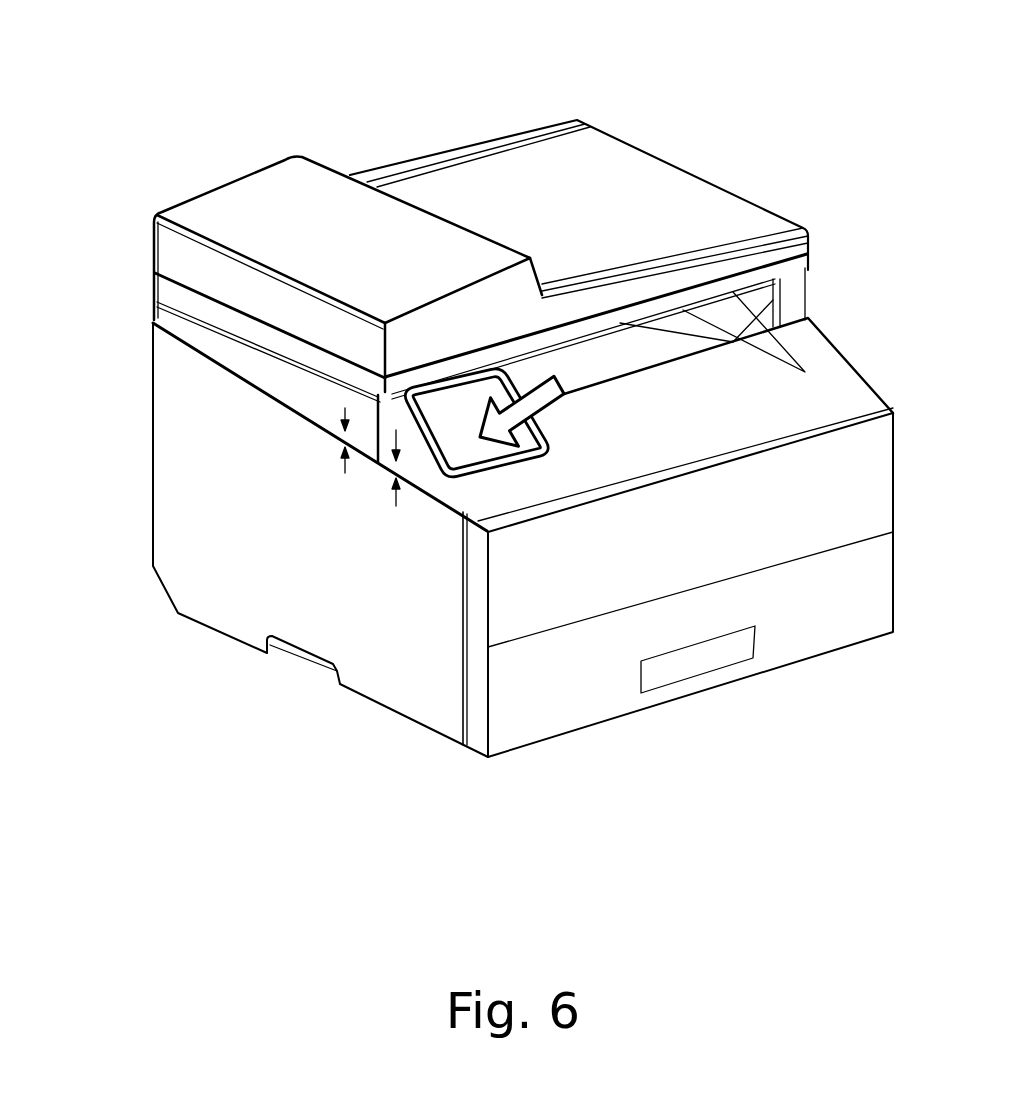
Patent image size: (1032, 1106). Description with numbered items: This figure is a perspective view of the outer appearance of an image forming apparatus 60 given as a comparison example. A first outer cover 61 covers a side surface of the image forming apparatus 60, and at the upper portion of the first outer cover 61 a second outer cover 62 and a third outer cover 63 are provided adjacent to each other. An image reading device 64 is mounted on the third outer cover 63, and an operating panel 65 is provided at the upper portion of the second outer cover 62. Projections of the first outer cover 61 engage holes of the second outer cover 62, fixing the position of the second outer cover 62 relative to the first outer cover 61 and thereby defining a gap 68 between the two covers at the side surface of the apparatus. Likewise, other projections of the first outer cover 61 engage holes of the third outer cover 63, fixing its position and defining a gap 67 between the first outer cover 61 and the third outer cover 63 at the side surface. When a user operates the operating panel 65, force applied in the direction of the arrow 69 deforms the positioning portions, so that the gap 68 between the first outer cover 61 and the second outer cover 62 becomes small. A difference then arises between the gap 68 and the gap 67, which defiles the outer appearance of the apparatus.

The image forming apparatus 60 is at (625, 102).
The first outer cover 61 is at (398, 664).
The second outer cover 62 is at (430, 482).
The third outer cover 63 is at (260, 368).
The image reading device 64 is at (230, 277).
The operating panel 65 is at (443, 413).
The gap 67 is at (346, 467).
The gap 68 is at (396, 499).
The arrow 69 is at (530, 403).